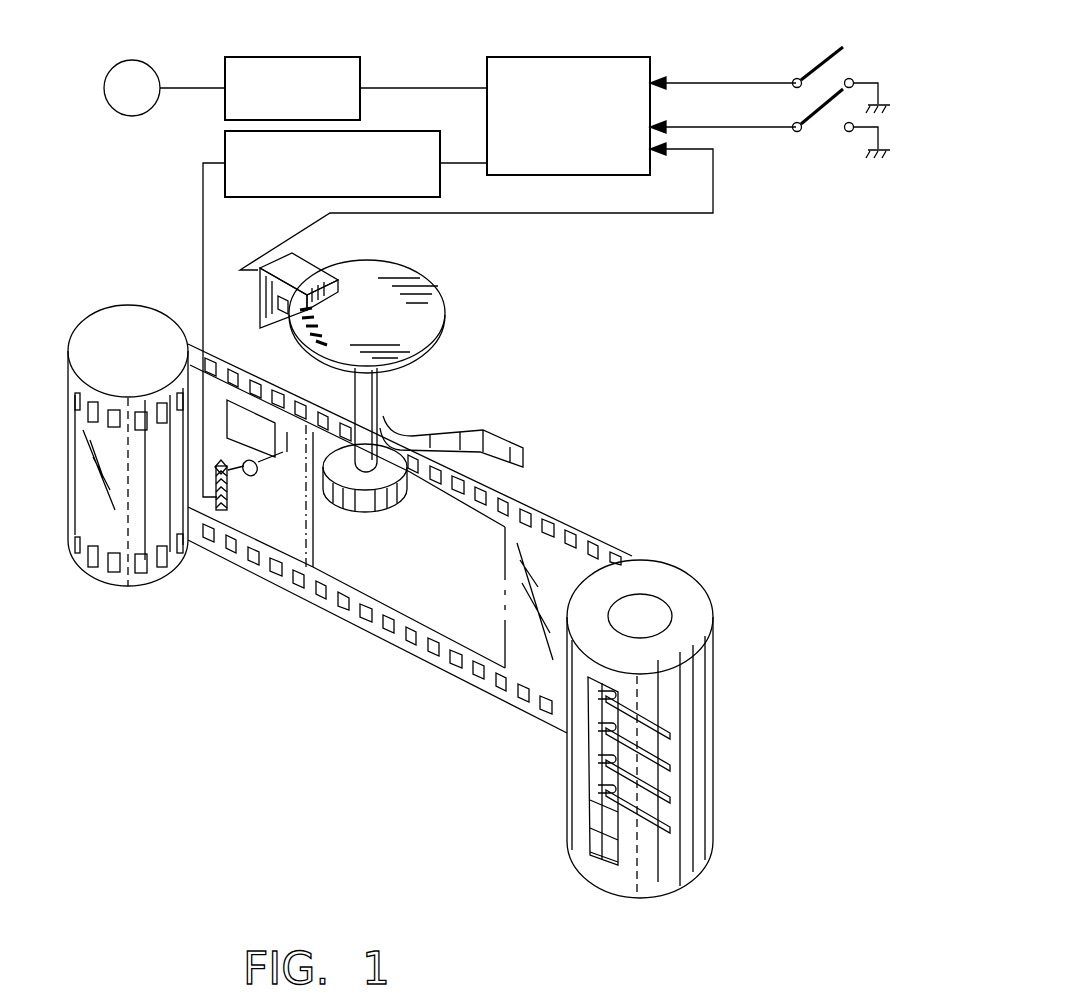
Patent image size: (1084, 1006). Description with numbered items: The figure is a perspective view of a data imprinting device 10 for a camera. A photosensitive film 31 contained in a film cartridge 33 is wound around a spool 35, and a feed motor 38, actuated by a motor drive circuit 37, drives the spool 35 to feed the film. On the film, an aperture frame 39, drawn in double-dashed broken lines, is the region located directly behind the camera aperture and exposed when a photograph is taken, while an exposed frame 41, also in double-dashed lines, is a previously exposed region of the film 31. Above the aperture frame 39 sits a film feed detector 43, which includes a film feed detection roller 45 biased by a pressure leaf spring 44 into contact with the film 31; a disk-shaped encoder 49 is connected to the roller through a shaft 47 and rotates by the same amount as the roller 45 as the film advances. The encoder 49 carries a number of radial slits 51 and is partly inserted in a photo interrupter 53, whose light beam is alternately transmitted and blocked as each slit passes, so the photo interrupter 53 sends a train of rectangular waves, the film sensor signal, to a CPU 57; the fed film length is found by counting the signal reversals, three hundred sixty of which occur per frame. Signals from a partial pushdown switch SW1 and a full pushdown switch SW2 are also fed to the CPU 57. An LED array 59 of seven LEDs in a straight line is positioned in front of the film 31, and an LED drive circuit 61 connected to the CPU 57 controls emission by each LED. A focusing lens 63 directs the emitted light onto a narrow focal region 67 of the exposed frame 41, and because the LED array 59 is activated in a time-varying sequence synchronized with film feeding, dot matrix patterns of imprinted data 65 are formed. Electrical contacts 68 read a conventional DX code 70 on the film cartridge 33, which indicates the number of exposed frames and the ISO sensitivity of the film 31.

The data imprinting device 10 is at (103, 222).
The photosensitive film 31 is at (557, 517).
The film cartridge 33 is at (713, 690).
The spool 35 is at (110, 318).
The motor drive circuit 37 is at (278, 62).
The feed motor 38 is at (130, 61).
The aperture frame 39 is at (430, 625).
The exposed frame 41 is at (300, 603).
The film feed detector 43 is at (480, 370).
The pressure leaf spring 44 is at (460, 430).
The film feed detection roller 45 is at (362, 508).
The shaft 47 is at (378, 412).
The encoder 49 is at (421, 291).
The radial slits 51 is at (326, 341).
The photo interrupter 53 is at (308, 257).
The CPU 57 is at (507, 65).
The LED array 59 is at (215, 505).
The LED drive circuit 61 is at (263, 191).
The focusing lens 63 is at (250, 478).
The imprinted data 65 is at (232, 418).
The focal region 67 is at (287, 452).
The electrical contacts 68 is at (672, 800).
The DX code 70 is at (593, 787).
The partial pushdown switch SW1 is at (815, 72).
The full pushdown switch SW2 is at (822, 117).